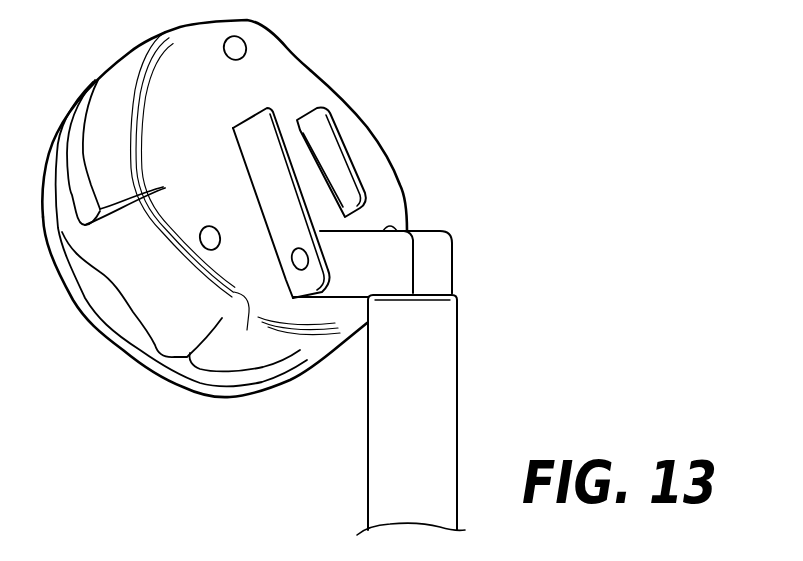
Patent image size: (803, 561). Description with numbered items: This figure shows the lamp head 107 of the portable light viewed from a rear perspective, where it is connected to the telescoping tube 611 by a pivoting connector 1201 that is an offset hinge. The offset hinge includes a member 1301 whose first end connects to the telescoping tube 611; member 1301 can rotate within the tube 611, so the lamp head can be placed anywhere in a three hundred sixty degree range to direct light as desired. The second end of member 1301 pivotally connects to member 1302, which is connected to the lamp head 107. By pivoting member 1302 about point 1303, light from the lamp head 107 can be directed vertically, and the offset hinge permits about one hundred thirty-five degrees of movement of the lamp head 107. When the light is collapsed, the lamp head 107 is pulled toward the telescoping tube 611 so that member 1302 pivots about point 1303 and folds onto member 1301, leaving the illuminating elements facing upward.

The lamp head 107 is at (393, 163).
The member 1302 is at (347, 181).
The point 1303 is at (303, 277).
The pivoting connector 1201 is at (453, 250).
The member 1301 is at (453, 287).
The telescoping tube 611 is at (458, 397).